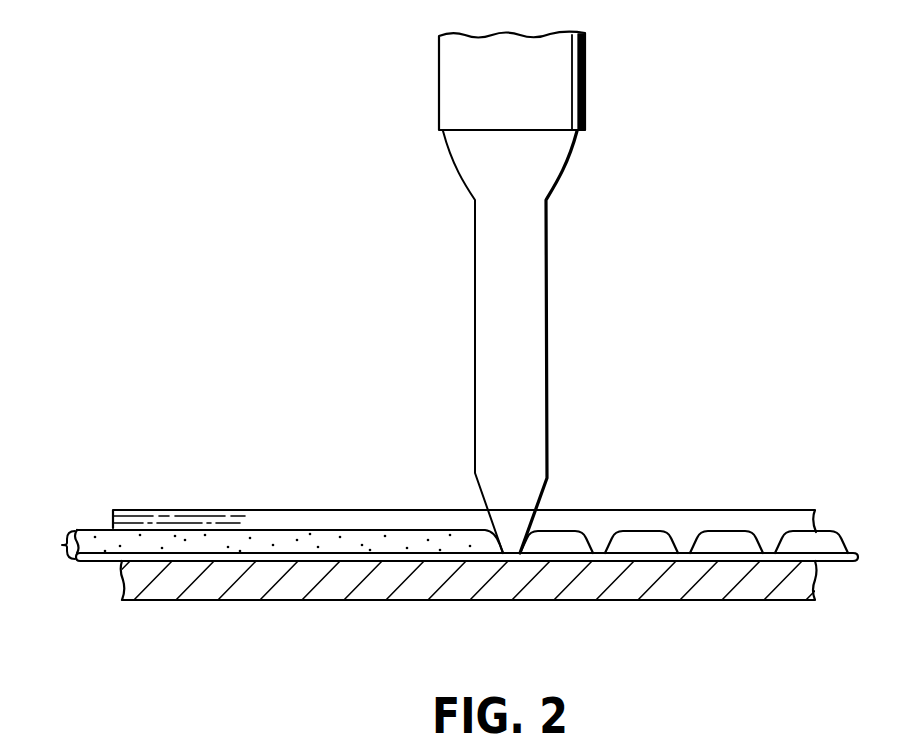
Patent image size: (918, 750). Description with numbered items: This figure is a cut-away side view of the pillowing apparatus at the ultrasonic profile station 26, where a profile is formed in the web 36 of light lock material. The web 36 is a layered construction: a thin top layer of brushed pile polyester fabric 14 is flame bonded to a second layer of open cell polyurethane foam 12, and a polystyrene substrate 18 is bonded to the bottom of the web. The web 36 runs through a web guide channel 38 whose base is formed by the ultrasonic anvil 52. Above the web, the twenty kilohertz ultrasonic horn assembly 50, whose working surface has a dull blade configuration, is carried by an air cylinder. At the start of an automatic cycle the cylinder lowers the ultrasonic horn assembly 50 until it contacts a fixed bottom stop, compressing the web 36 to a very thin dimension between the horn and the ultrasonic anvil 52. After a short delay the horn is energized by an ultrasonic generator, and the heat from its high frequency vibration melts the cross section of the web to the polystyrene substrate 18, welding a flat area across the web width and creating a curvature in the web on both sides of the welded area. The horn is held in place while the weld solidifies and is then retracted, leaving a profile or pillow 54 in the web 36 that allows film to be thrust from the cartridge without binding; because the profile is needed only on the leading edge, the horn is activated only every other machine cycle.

The open cell polyurethane foam 12 is at (263, 548).
The polyester fabric 14 is at (318, 528).
The polystyrene substrate 18 is at (310, 565).
The ultrasonic profile station 26 is at (298, 302).
The web 36 is at (50, 548).
The web guide channel 38 is at (765, 528).
The ultrasonic horn assembly 50 is at (462, 88).
The ultrasonic anvil 52 is at (630, 580).
The pillow 54 is at (693, 530).